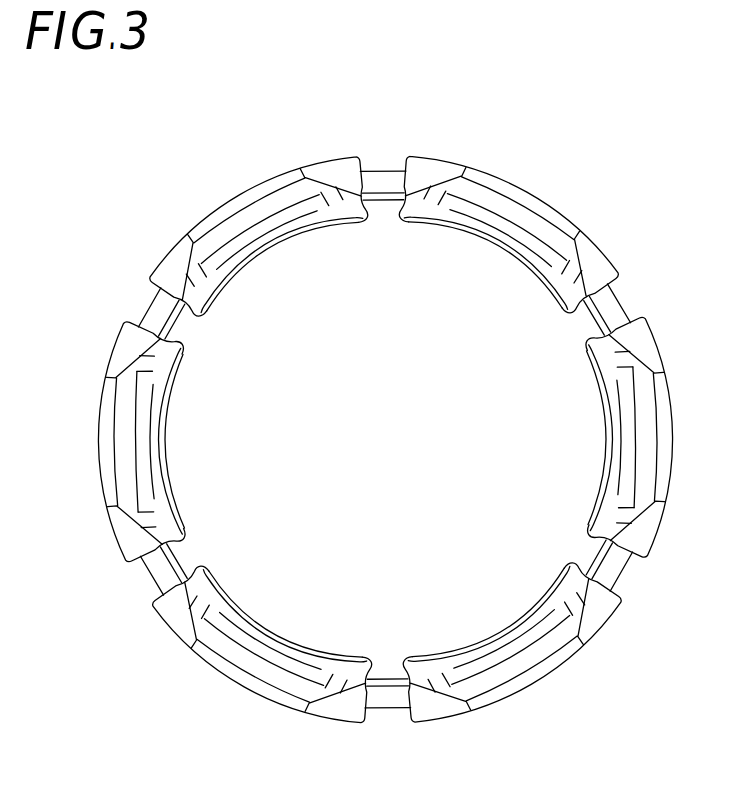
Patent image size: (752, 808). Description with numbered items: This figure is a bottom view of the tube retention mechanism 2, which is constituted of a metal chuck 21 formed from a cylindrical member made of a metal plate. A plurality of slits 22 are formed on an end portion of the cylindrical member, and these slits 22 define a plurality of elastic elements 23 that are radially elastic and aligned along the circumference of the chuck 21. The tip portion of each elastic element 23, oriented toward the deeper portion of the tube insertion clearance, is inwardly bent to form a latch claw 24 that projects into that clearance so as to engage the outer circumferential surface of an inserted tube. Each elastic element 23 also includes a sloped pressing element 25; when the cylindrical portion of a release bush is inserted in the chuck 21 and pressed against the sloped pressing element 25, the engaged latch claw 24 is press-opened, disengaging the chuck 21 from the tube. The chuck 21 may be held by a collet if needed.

The tube retention mechanism 2 is at (371, 438).
The chuck 21 is at (533, 189).
The slits 22 is at (380, 164).
The elastic elements 23 is at (255, 212).
The latch claw 24 is at (277, 246).
The sloped pressing element 25 is at (518, 285).